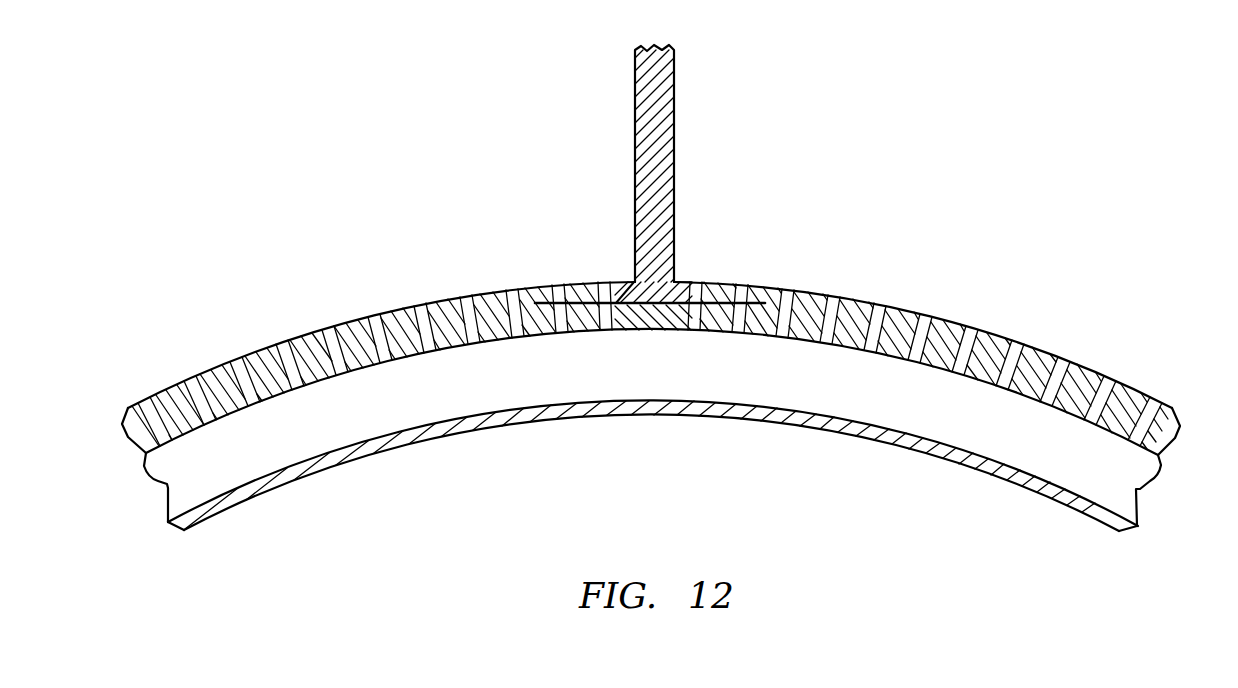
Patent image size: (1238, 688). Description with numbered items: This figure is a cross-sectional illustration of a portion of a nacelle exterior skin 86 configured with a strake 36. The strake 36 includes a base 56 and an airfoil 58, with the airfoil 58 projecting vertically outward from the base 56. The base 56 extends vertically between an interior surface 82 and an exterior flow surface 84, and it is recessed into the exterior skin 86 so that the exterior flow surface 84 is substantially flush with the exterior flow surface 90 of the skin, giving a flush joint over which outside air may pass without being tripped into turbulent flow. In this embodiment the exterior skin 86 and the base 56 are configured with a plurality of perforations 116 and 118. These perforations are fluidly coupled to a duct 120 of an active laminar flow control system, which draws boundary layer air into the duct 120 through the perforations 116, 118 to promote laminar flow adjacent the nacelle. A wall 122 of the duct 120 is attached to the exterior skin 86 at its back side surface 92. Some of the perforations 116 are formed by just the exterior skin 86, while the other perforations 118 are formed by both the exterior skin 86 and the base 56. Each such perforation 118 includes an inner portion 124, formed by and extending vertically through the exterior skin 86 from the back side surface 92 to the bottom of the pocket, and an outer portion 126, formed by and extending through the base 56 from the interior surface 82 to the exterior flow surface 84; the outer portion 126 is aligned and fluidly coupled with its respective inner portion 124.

The strake 36 is at (675, 212).
The airfoil 58 is at (676, 120).
The base 56 is at (632, 281).
The perforations 118 is at (605, 284).
The exterior flow surface 84 is at (684, 282).
The outer portion 126 is at (742, 287).
The perforations 116 is at (388, 308).
The exterior skin 86 is at (651, 332).
The exterior flow surface 90 is at (185, 384).
The back side surface 92 is at (201, 427).
The duct 120 is at (452, 397).
The interior surface 82 is at (664, 331).
The inner portion 124 is at (740, 332).
The wall 122 is at (480, 420).